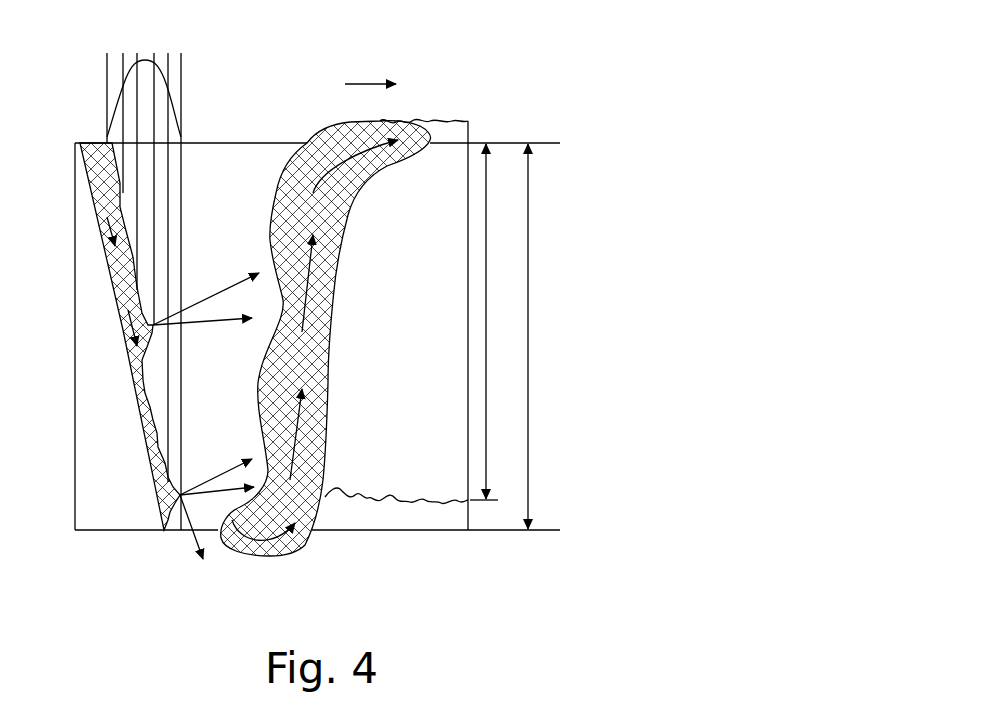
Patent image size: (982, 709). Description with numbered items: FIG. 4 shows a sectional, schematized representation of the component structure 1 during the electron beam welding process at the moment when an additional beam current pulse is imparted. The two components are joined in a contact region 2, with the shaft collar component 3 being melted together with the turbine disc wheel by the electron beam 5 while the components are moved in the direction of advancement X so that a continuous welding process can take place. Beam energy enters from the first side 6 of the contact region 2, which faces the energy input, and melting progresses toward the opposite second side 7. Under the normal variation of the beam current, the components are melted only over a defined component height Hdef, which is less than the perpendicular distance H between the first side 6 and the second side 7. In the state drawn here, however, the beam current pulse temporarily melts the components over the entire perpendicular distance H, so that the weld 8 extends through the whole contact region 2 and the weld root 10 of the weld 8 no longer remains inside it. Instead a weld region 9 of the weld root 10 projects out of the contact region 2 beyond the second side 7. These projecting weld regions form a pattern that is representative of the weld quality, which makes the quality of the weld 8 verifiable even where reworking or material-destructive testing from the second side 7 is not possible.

The component structure 1 is at (243, 76).
The contact region 2 is at (472, 330).
The component 3 is at (272, 140).
The electron beam 5 is at (107, 77).
The first side 6 is at (222, 140).
The second side 7 is at (165, 544).
The weld 8 is at (383, 130).
The weld region 9 is at (255, 564).
The weld root 10 is at (302, 547).
The defined component height Hdef is at (486, 190).
The perpendicular distance H is at (528, 283).
The direction of advancement X is at (375, 84).